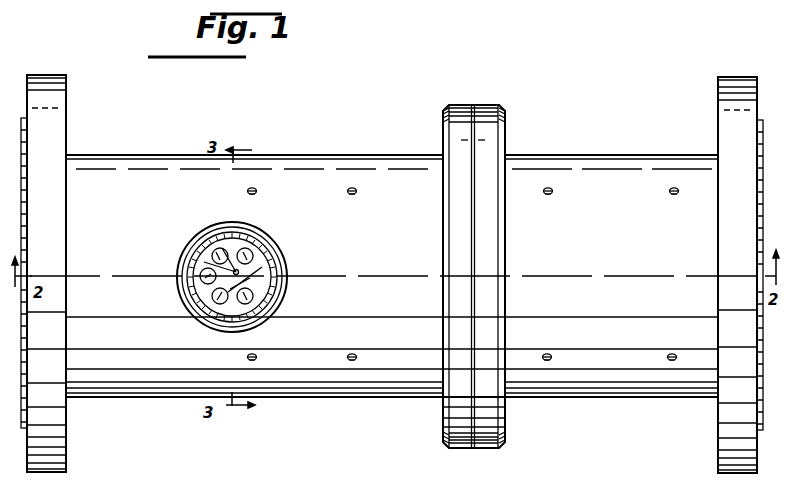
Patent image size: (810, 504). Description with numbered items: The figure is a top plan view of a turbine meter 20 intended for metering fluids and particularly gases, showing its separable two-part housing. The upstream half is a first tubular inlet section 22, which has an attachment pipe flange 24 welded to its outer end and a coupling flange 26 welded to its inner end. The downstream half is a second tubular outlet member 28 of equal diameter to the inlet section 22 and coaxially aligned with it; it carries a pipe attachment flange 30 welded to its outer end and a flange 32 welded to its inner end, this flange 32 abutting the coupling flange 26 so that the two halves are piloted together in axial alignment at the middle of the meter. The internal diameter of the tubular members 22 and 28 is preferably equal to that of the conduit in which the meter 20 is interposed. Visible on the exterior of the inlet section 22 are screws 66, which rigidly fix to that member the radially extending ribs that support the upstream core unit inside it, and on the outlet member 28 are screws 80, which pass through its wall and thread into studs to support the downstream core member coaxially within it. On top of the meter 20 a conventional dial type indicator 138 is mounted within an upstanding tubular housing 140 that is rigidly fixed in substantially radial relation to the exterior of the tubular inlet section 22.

The turbine meter 20 is at (395, 256).
The first tubular inlet section 22 is at (249, 140).
The attachment pipe flange 24 is at (57, 139).
The coupling flange 26 is at (443, 427).
The second tubular outlet member 28 is at (617, 156).
The pipe attachment flange 30 is at (718, 93).
The flange 32 is at (505, 428).
The screws 66 is at (352, 196).
The screws 80 is at (547, 196).
The dial type indicator 138 is at (262, 267).
The upstanding tubular housing 140 is at (270, 246).